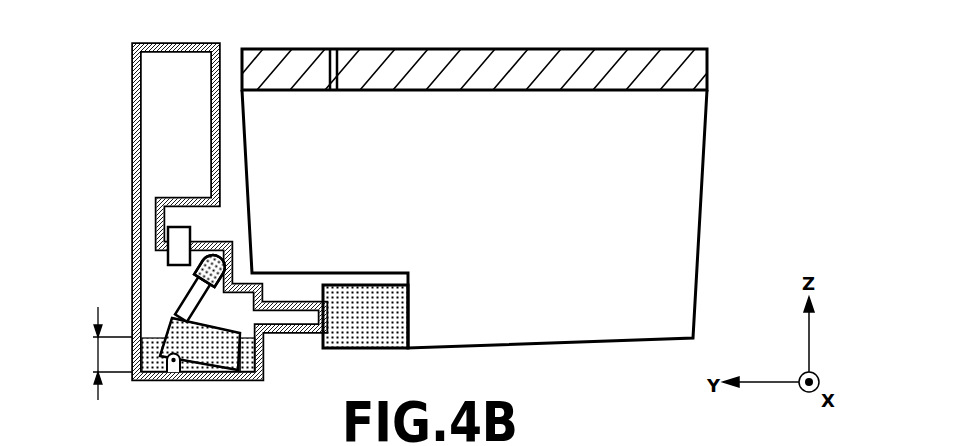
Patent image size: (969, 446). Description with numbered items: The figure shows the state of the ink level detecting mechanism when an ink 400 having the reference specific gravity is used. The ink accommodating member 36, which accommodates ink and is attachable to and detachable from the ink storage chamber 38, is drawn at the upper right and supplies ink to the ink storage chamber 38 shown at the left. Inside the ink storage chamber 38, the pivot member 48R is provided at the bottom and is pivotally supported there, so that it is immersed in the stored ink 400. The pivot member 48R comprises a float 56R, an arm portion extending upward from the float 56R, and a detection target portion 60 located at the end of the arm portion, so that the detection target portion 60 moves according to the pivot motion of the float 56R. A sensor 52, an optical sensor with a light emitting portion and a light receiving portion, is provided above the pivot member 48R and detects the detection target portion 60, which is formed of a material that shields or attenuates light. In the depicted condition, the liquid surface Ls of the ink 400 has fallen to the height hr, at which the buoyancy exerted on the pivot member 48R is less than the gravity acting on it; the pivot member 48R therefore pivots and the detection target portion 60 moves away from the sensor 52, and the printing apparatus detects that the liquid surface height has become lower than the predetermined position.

The ink accommodating member 36 is at (578, 46).
The ink storage chamber 38 is at (132, 89).
The sensor 52 is at (182, 228).
The detection target portion 60 is at (203, 260).
The pivot member 48R is at (170, 307).
The float 56R is at (222, 373).
The reference ink 400 is at (255, 356).
The liquid surface Ls is at (155, 337).
The height hr is at (97, 353).